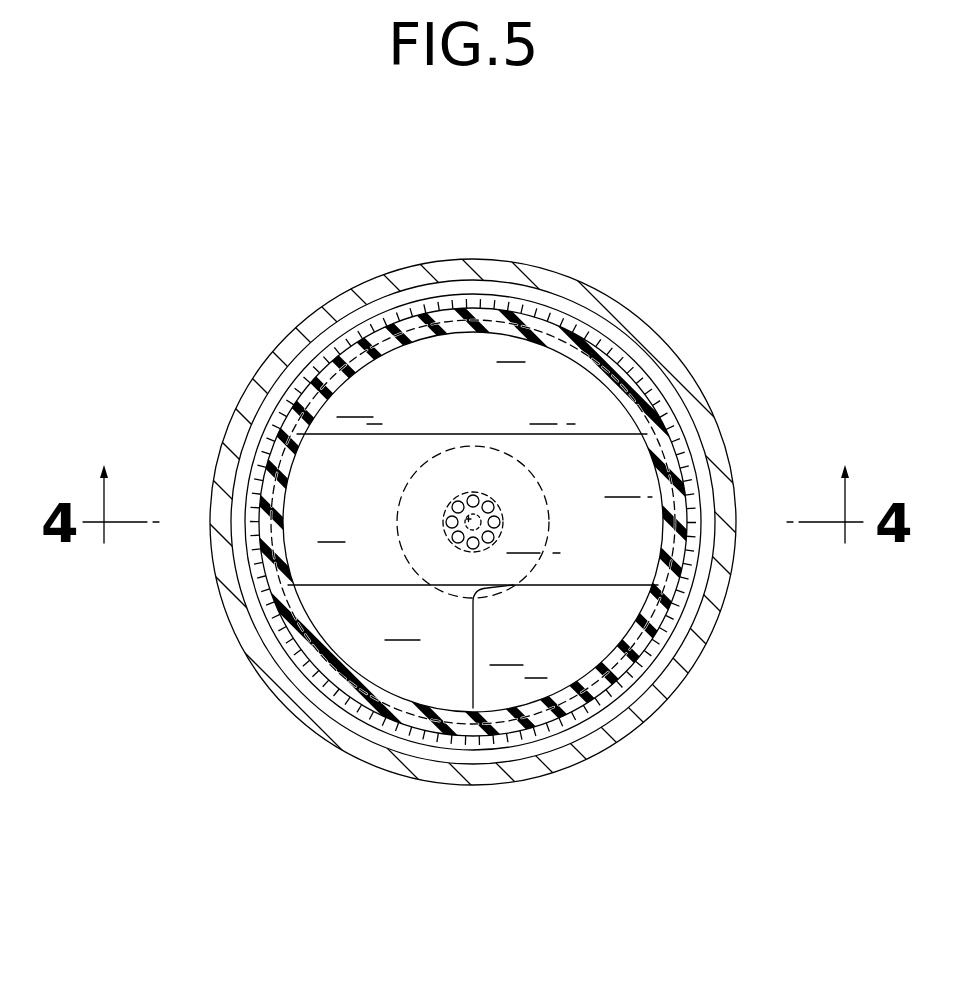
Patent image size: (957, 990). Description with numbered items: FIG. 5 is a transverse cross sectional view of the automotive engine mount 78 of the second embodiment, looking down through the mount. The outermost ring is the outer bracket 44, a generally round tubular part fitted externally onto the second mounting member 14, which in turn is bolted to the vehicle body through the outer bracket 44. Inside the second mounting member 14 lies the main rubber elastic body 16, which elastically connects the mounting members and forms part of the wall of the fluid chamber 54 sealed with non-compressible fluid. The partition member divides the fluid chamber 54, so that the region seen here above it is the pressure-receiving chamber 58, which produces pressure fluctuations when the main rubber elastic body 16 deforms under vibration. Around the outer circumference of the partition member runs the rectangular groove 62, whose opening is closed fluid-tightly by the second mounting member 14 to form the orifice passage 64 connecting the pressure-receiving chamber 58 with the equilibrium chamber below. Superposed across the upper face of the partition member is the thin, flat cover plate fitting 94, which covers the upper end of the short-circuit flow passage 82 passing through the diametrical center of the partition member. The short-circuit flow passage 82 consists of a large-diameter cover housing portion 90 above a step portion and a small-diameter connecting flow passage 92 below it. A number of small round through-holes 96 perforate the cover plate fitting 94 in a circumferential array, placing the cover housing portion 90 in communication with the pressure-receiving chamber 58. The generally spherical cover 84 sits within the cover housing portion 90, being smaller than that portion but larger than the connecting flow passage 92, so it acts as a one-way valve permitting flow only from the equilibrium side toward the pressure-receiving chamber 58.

The automotive engine mount 78 is at (478, 500).
The outer bracket 44 is at (741, 613).
The second mounting member 14 is at (712, 498).
The main rubber elastic body 16 is at (495, 546).
The fluid chamber 54 is at (397, 380).
The pressure-receiving chamber 58 is at (486, 392).
The rectangular groove 62 is at (501, 480).
The orifice passage 64 is at (473, 646).
The cover plate fitting 94 is at (558, 517).
The cover 84 is at (494, 550).
The through-holes 96 is at (472, 501).
The short-circuit flow passage 82 is at (270, 444).
The cover housing portion 90 is at (452, 510).
The connecting flow passage 92 is at (452, 521).